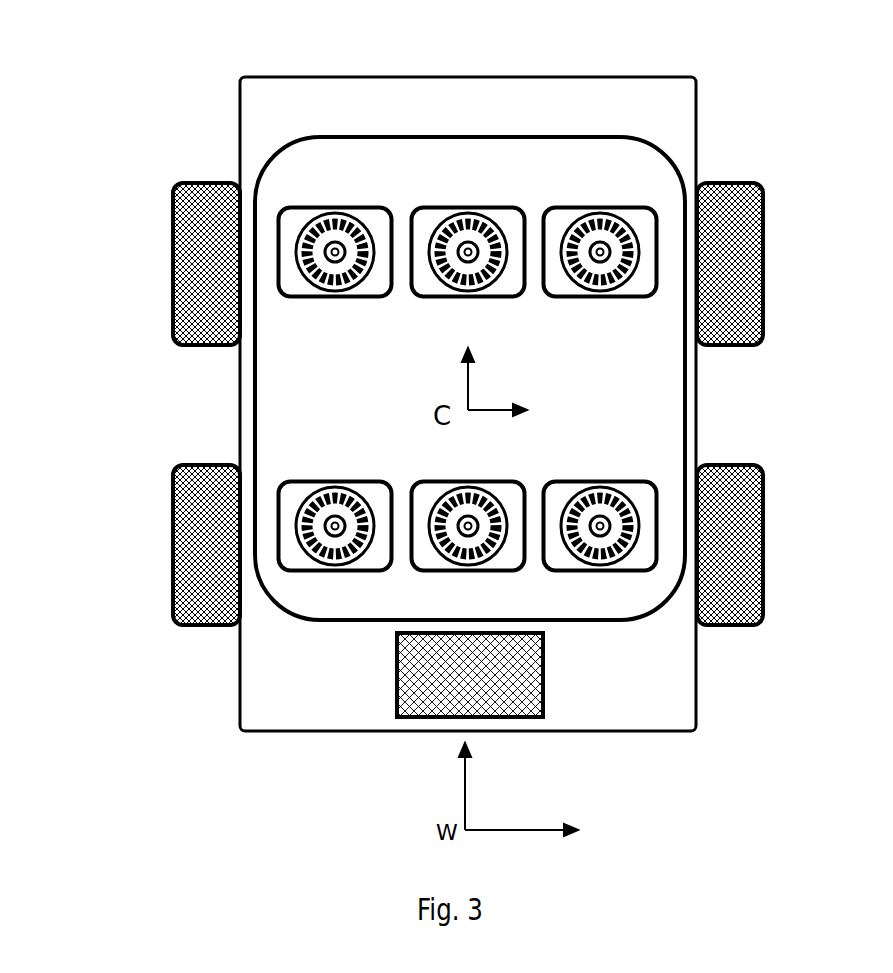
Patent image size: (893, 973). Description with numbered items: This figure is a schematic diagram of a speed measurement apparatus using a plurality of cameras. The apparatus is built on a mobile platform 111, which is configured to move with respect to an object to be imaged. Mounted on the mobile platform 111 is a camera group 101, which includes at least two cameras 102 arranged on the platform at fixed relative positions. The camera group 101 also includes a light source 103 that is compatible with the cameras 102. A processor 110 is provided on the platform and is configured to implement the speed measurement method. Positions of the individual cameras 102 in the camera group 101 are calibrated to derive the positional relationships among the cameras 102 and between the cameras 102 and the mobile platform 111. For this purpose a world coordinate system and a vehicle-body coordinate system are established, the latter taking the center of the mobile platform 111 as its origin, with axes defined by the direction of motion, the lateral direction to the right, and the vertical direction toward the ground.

The camera group 101 is at (288, 143).
The camera 102 is at (435, 208).
The light source 103 is at (627, 208).
The processor 110 is at (470, 675).
The mobile platform 111 is at (240, 385).